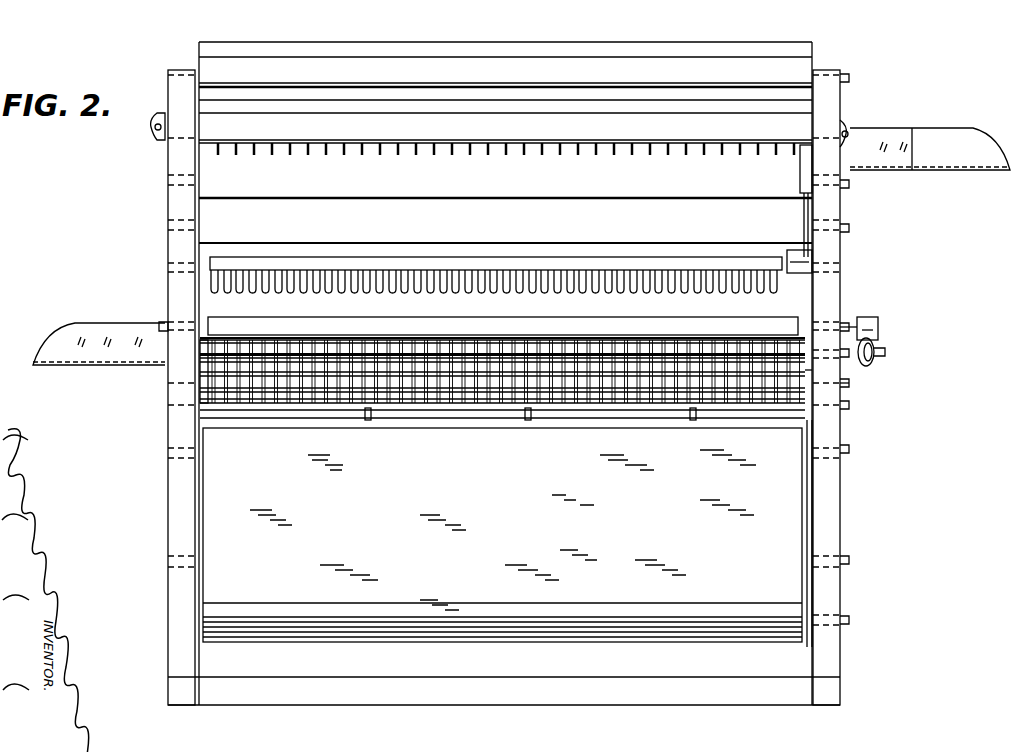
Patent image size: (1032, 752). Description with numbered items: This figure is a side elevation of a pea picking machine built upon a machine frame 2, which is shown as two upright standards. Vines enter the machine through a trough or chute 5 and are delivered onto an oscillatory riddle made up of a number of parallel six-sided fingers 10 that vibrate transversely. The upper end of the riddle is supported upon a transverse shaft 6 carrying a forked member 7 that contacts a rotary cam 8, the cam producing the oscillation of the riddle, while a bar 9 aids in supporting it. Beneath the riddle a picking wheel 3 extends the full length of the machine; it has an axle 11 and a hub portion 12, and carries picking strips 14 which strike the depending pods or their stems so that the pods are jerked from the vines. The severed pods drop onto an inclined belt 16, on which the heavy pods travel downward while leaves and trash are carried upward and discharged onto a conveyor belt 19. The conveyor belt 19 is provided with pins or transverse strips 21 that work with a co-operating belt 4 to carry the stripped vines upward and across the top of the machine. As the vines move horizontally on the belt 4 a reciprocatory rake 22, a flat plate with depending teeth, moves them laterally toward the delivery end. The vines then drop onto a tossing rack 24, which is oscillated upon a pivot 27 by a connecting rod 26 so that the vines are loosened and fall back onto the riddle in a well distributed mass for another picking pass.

The machine frame 2 is at (172, 507).
The picking wheel 3 is at (365, 420).
The belt 4 is at (405, 172).
The trough or chute 5 is at (112, 368).
The transverse shaft 6 is at (840, 327).
The forked member 7 is at (878, 322).
The rotary cam 8 is at (878, 355).
The bar 9 is at (200, 358).
The fingers 10 is at (642, 347).
The axle 11 is at (848, 381).
The hub portion 12 is at (808, 373).
The picking strips 14 is at (433, 415).
The belt 16 is at (507, 533).
The conveyor belt 19 is at (800, 67).
The pins or transverse strips 21 is at (798, 50).
The reciprocatory rake 22 is at (708, 140).
The tossing rack 24 is at (783, 291).
The connecting rod 26 is at (807, 228).
The pivot 27 is at (785, 273).